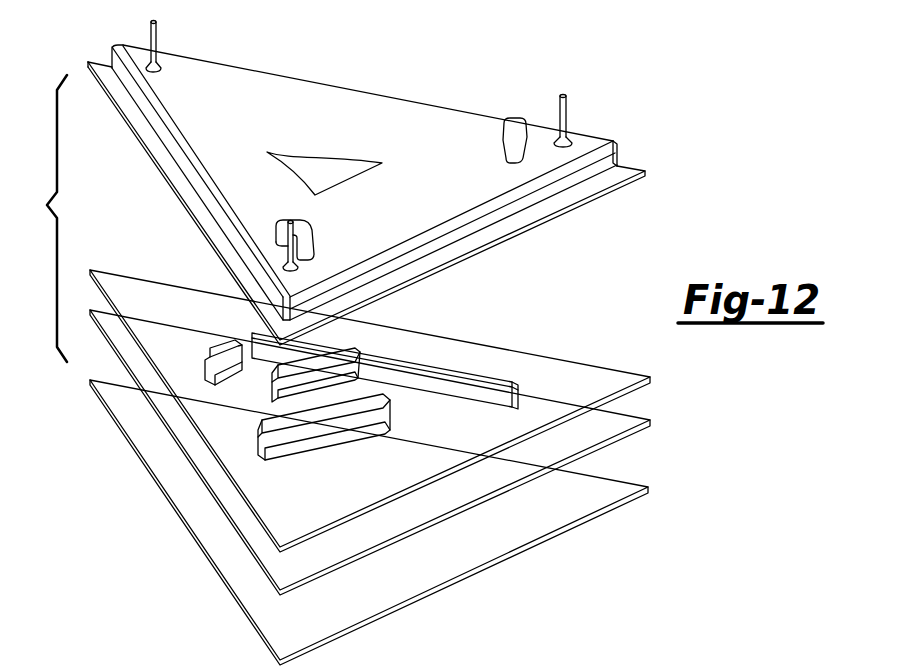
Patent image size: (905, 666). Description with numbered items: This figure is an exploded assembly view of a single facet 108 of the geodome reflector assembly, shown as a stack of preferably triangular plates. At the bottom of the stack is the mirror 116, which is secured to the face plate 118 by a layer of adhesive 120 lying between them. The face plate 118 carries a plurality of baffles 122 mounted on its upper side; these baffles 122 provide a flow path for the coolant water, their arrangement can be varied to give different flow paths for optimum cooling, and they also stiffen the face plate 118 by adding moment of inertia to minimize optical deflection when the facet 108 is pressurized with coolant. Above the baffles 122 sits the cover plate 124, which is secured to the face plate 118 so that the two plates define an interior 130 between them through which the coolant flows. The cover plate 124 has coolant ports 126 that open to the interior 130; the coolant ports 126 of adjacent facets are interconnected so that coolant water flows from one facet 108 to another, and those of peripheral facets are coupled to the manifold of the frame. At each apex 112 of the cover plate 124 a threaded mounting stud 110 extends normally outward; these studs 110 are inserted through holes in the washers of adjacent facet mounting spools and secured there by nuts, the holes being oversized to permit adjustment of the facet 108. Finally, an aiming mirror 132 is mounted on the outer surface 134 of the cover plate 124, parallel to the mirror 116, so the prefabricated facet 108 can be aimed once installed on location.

The facet 108 is at (138, 572).
The threaded mounting stud 110 is at (157, 40).
The apex 112 is at (112, 46).
The mirror 116 is at (585, 522).
The face plate 118 is at (627, 377).
The layer of adhesive 120 is at (636, 424).
The baffle 122 is at (477, 375).
The cover plate 124 is at (273, 71).
The coolant port 126 is at (314, 236).
The interior 130 is at (294, 490).
The aiming mirror 132 is at (357, 148).
The outer surface 134 is at (430, 202).